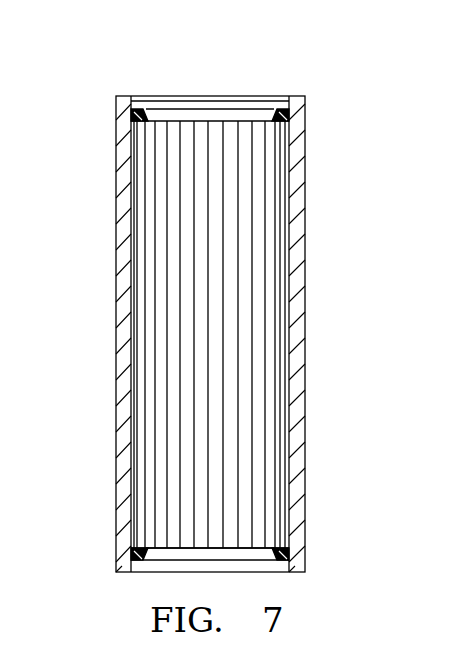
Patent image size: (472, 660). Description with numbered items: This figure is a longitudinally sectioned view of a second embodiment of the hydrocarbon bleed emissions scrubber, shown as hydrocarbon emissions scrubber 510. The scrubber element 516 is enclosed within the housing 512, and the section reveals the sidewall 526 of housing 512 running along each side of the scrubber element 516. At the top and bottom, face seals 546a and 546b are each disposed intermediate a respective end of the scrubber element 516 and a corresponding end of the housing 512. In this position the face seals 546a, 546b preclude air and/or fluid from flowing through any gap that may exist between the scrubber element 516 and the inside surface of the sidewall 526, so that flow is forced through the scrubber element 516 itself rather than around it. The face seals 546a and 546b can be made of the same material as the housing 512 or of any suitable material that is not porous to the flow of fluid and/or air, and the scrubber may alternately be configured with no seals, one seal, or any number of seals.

The hydrocarbon emissions scrubber 510 is at (86, 125).
The housing 512 is at (108, 405).
The scrubber element 516 is at (267, 268).
The sidewall 526 is at (305, 367).
The face seal 546a is at (303, 99).
The face seal 546b is at (300, 565).